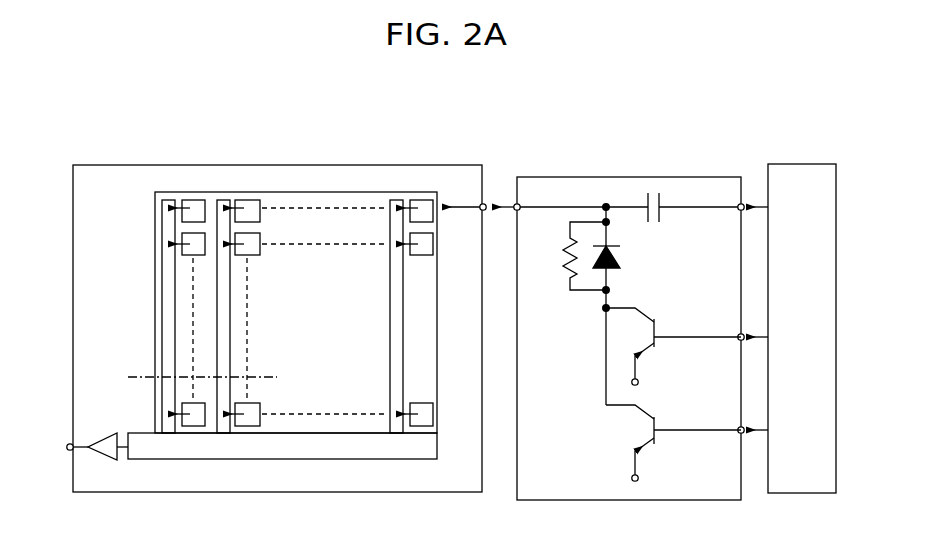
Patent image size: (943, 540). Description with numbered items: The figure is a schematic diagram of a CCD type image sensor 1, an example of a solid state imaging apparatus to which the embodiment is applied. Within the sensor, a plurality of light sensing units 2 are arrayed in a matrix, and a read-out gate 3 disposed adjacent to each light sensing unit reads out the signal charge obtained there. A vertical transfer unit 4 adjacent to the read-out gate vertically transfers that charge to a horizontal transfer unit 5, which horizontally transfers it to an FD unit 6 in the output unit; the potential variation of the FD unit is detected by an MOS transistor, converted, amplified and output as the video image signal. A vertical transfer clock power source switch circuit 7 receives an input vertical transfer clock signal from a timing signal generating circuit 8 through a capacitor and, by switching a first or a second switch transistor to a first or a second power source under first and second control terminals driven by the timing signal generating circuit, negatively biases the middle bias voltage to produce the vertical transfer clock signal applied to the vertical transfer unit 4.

The CCD type image sensor 1 is at (105, 165).
The light sensing unit 2 is at (192, 200).
The read-out gate 3 is at (235, 200).
The vertical transfer unit 4 is at (403, 199).
The horizontal transfer unit 5 is at (157, 460).
The FD unit 6 is at (113, 453).
The vertical transfer clock power source switch circuit 7 is at (545, 177).
The timing signal generating circuit 8 is at (783, 164).